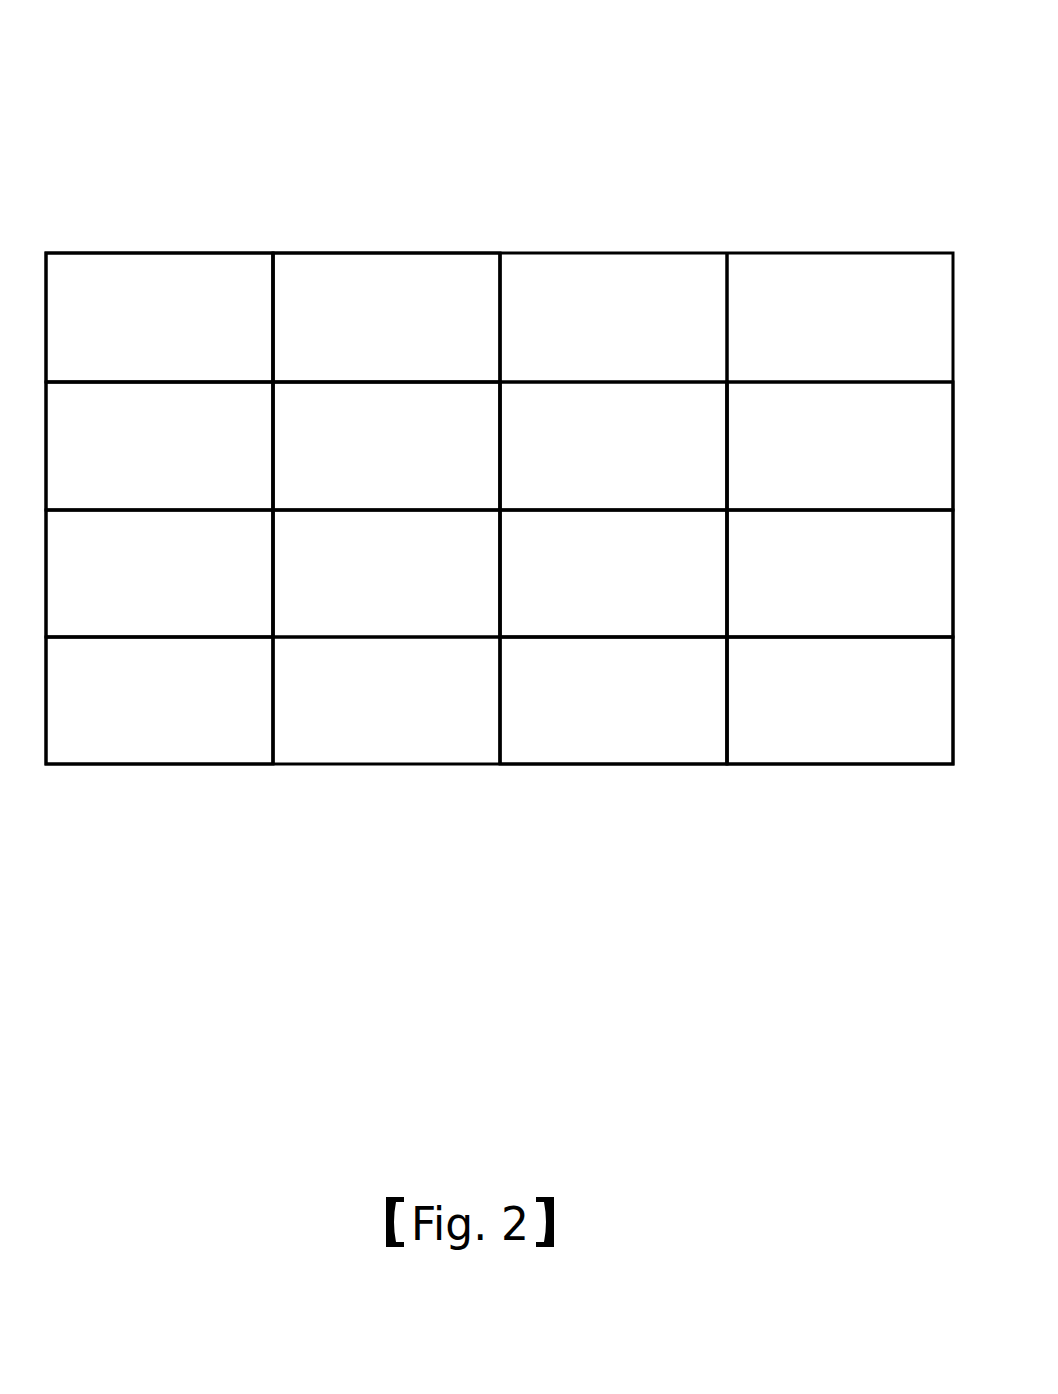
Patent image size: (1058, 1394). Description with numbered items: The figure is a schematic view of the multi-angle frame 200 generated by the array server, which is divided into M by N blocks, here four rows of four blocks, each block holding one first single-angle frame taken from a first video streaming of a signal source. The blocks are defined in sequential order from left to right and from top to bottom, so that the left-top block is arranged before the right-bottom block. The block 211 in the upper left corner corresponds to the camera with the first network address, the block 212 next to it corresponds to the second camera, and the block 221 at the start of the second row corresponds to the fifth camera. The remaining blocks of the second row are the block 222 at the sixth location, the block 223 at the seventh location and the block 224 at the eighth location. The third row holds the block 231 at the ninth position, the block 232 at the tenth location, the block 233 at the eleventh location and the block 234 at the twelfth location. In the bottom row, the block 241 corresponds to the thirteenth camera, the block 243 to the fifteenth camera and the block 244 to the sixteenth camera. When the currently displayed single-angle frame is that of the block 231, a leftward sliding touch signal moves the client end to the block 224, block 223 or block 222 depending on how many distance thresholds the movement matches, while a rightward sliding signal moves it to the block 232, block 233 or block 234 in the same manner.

The multi-angle frame 200 is at (497, 125).
The block 211 is at (136, 275).
The block 212 is at (345, 275).
The block 221 is at (219, 405).
The block 222 is at (432, 408).
The block 223 is at (661, 413).
The block 224 is at (891, 410).
The block 231 is at (201, 619).
The block 232 is at (433, 615).
The block 233 is at (652, 615).
The block 234 is at (880, 615).
The block 241 is at (118, 750).
The block 243 is at (572, 750).
The block 244 is at (800, 754).